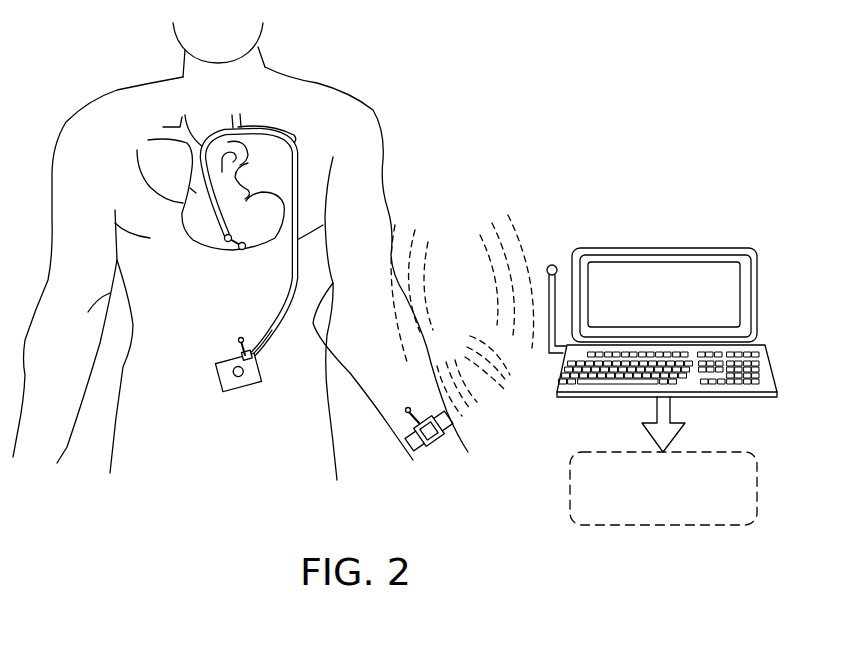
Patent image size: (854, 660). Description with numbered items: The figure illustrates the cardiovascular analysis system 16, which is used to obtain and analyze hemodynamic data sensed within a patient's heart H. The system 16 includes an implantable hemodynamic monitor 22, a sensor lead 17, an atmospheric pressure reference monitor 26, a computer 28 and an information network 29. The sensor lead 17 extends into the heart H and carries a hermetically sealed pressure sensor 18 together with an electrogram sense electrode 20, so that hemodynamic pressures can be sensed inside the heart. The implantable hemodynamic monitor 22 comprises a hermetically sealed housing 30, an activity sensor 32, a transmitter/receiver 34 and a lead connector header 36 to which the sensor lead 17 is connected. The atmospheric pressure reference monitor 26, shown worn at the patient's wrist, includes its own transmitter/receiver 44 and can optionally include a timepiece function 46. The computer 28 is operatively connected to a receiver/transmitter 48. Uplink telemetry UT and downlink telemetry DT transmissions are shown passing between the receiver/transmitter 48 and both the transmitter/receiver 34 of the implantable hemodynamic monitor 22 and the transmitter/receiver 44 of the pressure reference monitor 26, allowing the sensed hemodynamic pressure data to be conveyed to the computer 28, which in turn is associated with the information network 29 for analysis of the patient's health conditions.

The heart H is at (213, 182).
The cardiovascular analysis system 16 is at (512, 120).
The sensor lead 17 is at (279, 301).
The pressure sensor 18 is at (226, 240).
The electrogram sense electrode 20 is at (244, 249).
The implantable hemodynamic monitor 22 is at (246, 370).
The atmospheric pressure reference monitor 26 is at (422, 445).
The computer 28 is at (662, 303).
The information network 29 is at (604, 526).
The hermetically sealed housing 30 is at (259, 360).
The activity sensor 32 is at (238, 371).
The transmitter/receiver 34 is at (219, 336).
The lead connector header 36 is at (246, 355).
The transmitter/receiver 44 is at (405, 409).
The timepiece function 46 is at (429, 431).
The receiver/transmitter 48 is at (552, 265).
The downlink telemetry DT is at (434, 305).
The uplink telemetry UT is at (489, 302).